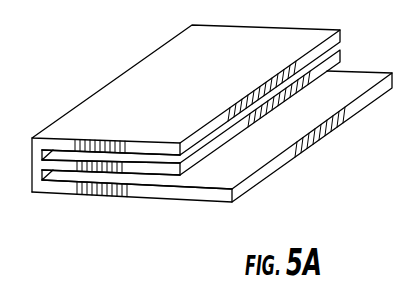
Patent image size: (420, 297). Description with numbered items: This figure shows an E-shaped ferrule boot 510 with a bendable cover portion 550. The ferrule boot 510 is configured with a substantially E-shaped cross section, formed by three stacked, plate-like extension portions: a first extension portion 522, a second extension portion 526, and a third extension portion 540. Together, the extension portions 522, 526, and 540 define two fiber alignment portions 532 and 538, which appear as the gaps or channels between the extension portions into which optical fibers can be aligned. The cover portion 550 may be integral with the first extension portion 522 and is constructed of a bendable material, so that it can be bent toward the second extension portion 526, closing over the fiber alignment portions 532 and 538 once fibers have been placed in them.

The ferrule boot 510 is at (92, 67).
The first extension portion 522 is at (32, 194).
The second extension portion 526 is at (137, 143).
The fiber alignment portion 532 is at (176, 161).
The third extension portion 540 is at (182, 172).
The fiber alignment portion 538 is at (176, 183).
The cover portion 550 is at (211, 203).